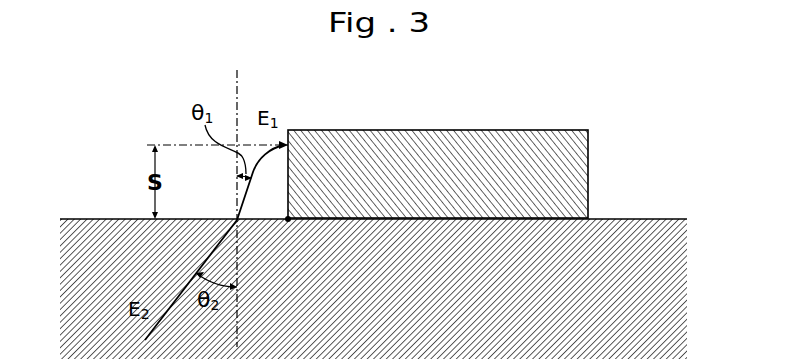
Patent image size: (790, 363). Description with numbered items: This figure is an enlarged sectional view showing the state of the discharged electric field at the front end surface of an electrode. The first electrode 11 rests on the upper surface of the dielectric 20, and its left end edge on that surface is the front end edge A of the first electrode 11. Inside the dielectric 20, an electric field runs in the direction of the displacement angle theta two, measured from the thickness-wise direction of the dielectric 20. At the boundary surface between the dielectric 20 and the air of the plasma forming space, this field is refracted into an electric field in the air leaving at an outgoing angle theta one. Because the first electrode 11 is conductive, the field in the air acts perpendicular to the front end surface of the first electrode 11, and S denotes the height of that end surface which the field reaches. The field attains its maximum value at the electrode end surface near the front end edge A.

The first electrode 11 is at (515, 143).
The dielectric 20 is at (637, 222).
The front end edge of the first electrode A is at (288, 218).